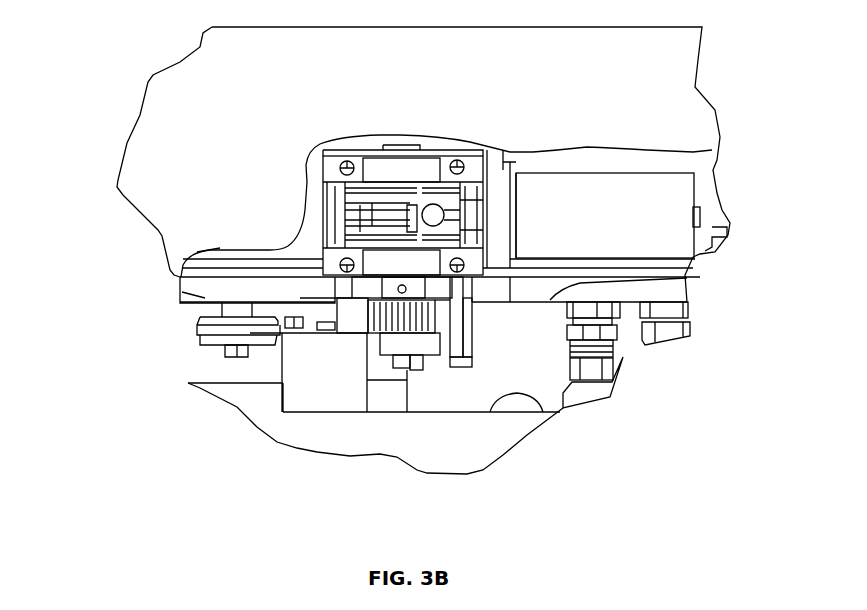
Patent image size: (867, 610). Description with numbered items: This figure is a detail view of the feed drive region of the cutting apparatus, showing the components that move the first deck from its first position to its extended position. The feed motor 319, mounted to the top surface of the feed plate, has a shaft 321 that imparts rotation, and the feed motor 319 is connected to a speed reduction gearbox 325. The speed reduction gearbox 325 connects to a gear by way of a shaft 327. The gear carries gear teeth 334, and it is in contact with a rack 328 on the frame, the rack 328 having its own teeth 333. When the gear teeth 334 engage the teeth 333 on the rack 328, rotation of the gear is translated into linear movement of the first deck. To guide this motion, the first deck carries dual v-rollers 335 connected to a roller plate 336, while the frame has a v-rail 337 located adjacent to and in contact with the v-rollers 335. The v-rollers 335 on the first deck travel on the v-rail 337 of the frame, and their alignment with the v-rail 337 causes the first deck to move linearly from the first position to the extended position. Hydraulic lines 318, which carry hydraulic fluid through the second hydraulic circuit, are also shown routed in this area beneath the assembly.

The hydraulic lines 318 is at (588, 388).
The feed motor 319 is at (659, 202).
The shaft 321 is at (470, 215).
The speed reduction gearbox 325 is at (322, 207).
The shaft 327 is at (434, 292).
The rack 328 is at (373, 313).
The teeth 333 is at (372, 317).
The gear teeth 334 is at (407, 370).
The v-rollers 335 is at (195, 323).
The roller plate 336 is at (205, 288).
The v-rail 337 is at (285, 326).